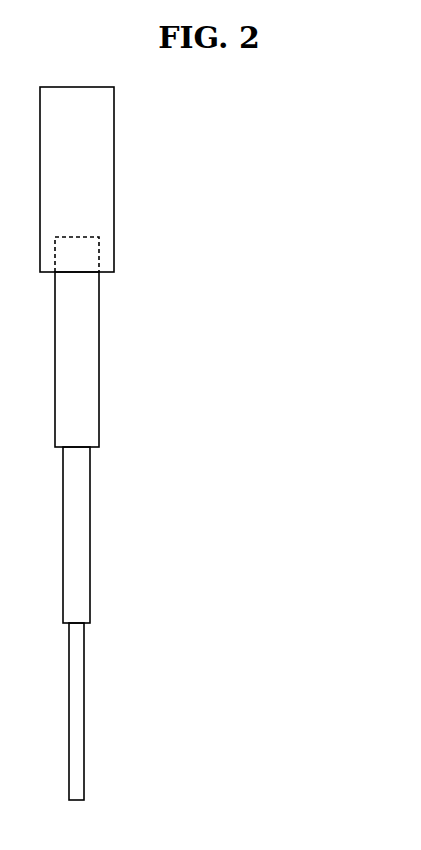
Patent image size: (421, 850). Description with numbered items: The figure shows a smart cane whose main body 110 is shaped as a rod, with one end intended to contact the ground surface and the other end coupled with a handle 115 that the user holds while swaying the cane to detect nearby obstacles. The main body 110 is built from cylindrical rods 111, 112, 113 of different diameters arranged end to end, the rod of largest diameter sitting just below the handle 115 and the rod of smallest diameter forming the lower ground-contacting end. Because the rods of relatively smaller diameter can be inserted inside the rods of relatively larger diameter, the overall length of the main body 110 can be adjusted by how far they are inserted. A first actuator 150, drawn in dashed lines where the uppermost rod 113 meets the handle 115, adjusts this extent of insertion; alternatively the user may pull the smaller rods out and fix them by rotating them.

The main body 110 is at (303, 452).
The cylindrical rod 111 is at (84, 710).
The cylindrical rod 112 is at (90, 537).
The cylindrical rod 113 is at (99, 350).
The handle 115 is at (114, 177).
The first actuator 150 is at (98, 250).